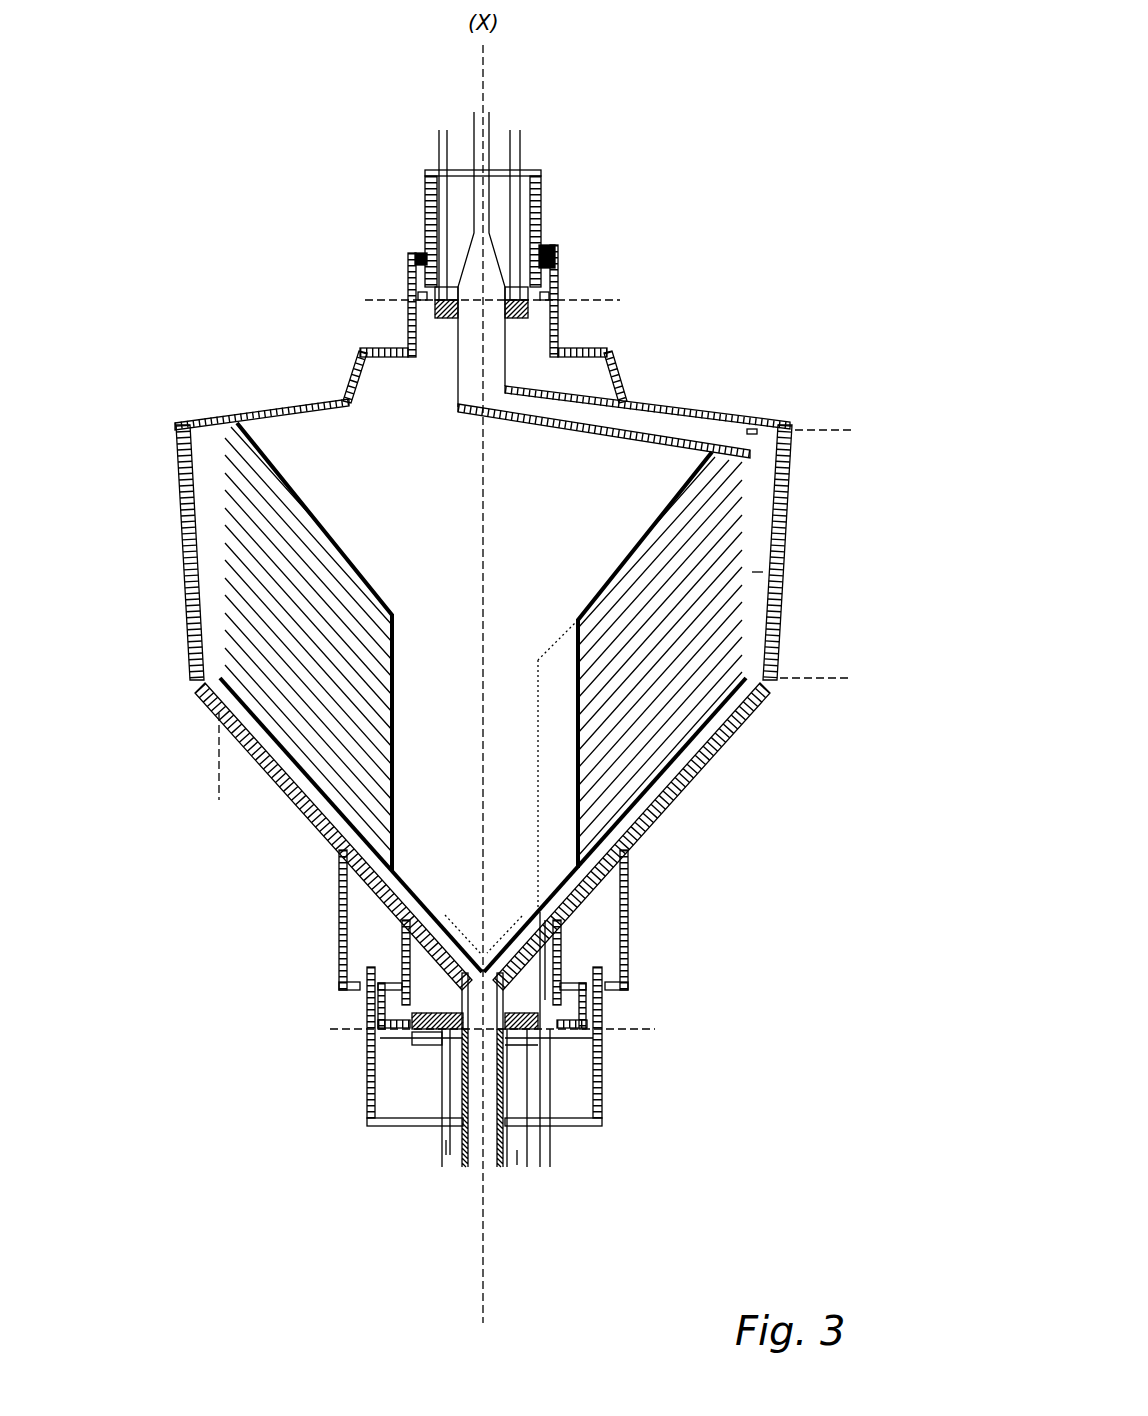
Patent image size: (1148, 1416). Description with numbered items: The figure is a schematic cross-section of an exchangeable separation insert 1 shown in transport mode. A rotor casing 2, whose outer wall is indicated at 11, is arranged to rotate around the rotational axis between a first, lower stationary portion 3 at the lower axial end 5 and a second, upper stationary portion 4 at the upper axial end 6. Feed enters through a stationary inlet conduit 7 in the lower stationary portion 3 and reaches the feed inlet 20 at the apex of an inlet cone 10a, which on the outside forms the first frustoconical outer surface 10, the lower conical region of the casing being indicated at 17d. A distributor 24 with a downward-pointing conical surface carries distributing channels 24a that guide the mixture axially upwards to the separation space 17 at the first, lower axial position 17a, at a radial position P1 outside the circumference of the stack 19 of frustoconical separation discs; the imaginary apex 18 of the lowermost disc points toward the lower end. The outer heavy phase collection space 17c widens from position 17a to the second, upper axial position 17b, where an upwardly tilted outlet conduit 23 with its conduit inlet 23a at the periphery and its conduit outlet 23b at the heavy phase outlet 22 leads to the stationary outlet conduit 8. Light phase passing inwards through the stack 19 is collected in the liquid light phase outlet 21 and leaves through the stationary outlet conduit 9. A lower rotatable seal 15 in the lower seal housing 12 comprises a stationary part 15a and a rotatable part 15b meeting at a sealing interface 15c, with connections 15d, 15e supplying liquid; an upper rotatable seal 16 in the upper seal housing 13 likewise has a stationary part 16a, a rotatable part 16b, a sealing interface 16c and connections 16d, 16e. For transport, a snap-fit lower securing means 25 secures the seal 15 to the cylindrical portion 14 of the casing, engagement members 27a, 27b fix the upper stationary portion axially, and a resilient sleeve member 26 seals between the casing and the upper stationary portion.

The exchangeable separation insert 1 is at (158, 162).
The rotor casing 2 is at (228, 418).
The first, lower stationary portion 3 is at (605, 1125).
The second, upper stationary portion 4 is at (425, 216).
The lower axial end 5 is at (585, 1222).
The upper axial end 6 is at (445, 78).
The stationary inlet conduit 7 is at (445, 1135).
The stationary outlet conduit 8 is at (490, 112).
The stationary outlet conduit 9 is at (548, 1145).
The first frustoconical outer surface 10 is at (705, 783).
The inlet cone 10a is at (630, 868).
The outer casing side wall 11 is at (185, 562).
The lower seal housing 12 is at (602, 1070).
The upper seal housing 13 is at (410, 258).
The cylindrical portion 14 is at (340, 962).
The lower rotatable seal 15 is at (420, 1065).
The stationary part 15a is at (412, 1040).
The rotatable part 15b is at (378, 1022).
The sealing interface 15c is at (513, 1031).
The connection 15d is at (446, 1155).
The connection 15e is at (522, 1165).
The upper rotatable seal 16 is at (425, 313).
The stationary part 16a is at (420, 286).
The rotatable part 16b is at (552, 303).
The sealing interface 16c is at (473, 301).
The connection 16d is at (440, 131).
The connection 16e is at (520, 131).
The separation space 17 is at (762, 506).
The first, lower axial position 17a is at (837, 681).
The second, upper axial position 17b is at (845, 433).
The outer heavy phase collection space 17c is at (752, 572).
The conical wall 17d is at (760, 715).
The imaginary apex 18 is at (578, 922).
The stack of frustoconical separation discs 19 is at (735, 627).
The feed inlet 20 is at (563, 980).
The liquid light phase outlet 21 is at (565, 958).
The heavy phase outlet 22 is at (500, 350).
The outlet conduit 23 is at (697, 425).
The conduit inlet 23a is at (752, 432).
The conduit outlet 23b is at (560, 388).
The distributor 24 is at (293, 770).
The distributing channels 24a is at (325, 810).
The lower securing means 25 is at (585, 975).
The sleeve member 26 is at (549, 250).
The engagement member 27a is at (556, 265).
The engagement member 27b is at (556, 290).
The radial position P1 is at (223, 770).